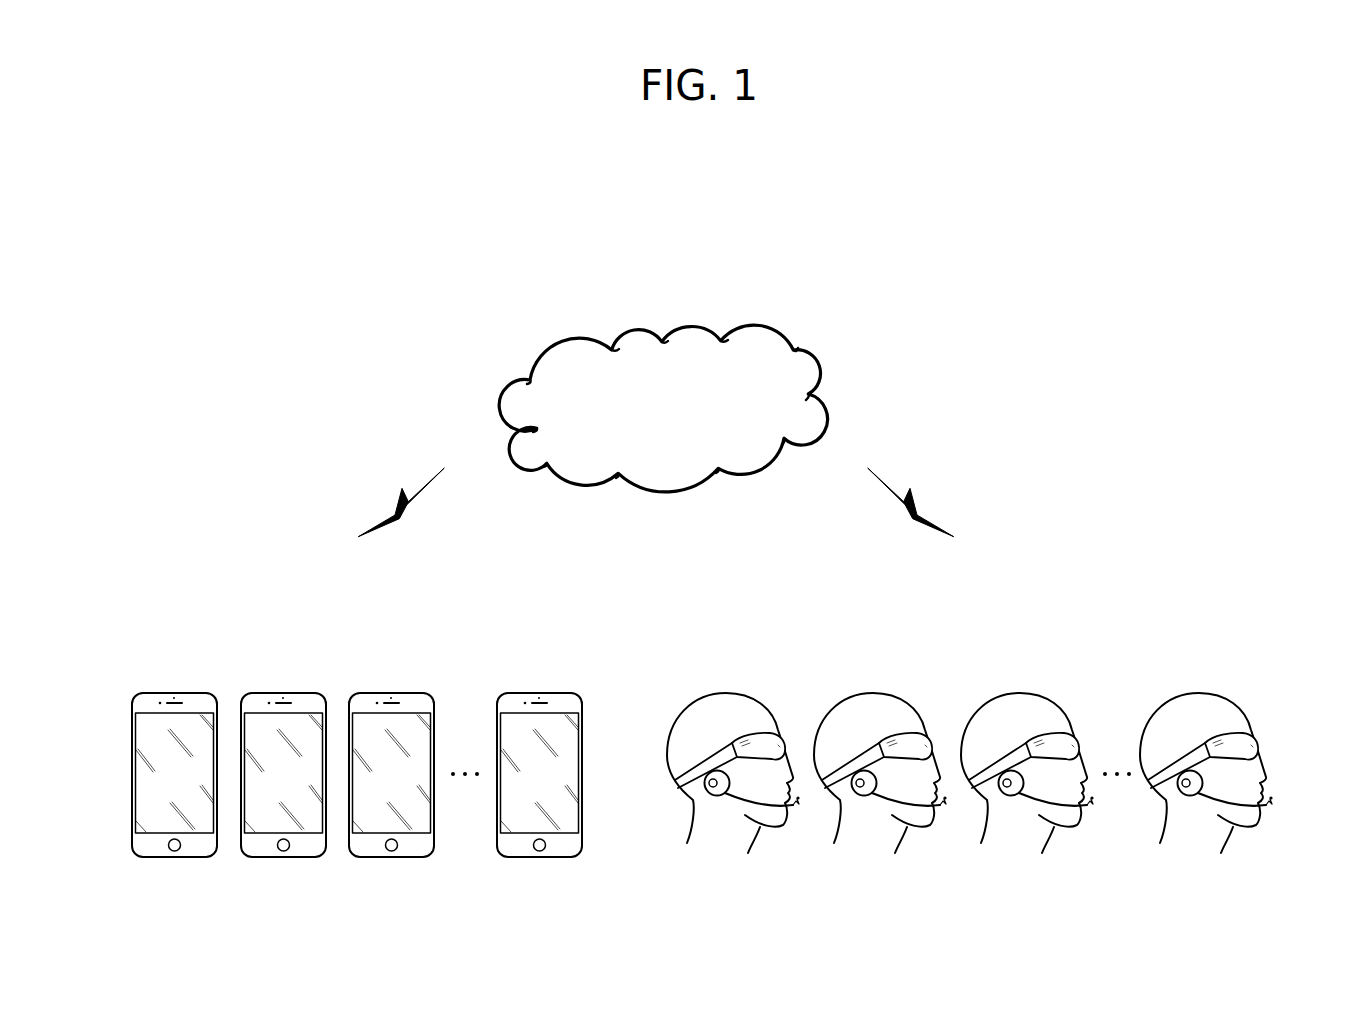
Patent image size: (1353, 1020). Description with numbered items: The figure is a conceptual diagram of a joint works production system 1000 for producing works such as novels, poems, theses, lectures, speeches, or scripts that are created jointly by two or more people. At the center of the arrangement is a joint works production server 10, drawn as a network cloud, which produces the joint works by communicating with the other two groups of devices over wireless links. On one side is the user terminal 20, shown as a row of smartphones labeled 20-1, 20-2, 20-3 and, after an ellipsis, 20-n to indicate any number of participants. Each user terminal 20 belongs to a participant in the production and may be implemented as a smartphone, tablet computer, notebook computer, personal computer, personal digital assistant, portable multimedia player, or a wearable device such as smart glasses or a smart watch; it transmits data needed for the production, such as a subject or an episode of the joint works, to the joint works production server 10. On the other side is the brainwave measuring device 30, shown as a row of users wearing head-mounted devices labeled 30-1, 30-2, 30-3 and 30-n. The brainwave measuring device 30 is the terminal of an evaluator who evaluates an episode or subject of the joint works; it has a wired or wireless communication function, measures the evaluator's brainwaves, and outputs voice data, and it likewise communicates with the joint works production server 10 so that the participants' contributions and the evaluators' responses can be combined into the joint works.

The joint works production system 1000 is at (198, 205).
The joint works production server 10 is at (758, 323).
The user terminal 20 is at (147, 623).
The user terminal 20-1 is at (174, 741).
The user terminal 20-2 is at (283, 741).
The user terminal 20-3 is at (391, 741).
The user terminal 20-n is at (539, 741).
The brainwave measuring device 30 is at (1217, 623).
The brainwave measuring device 30-1 is at (733, 739).
The brainwave measuring device 30-2 is at (880, 739).
The brainwave measuring device 30-3 is at (1027, 739).
The brainwave measuring device 30-n is at (1206, 739).